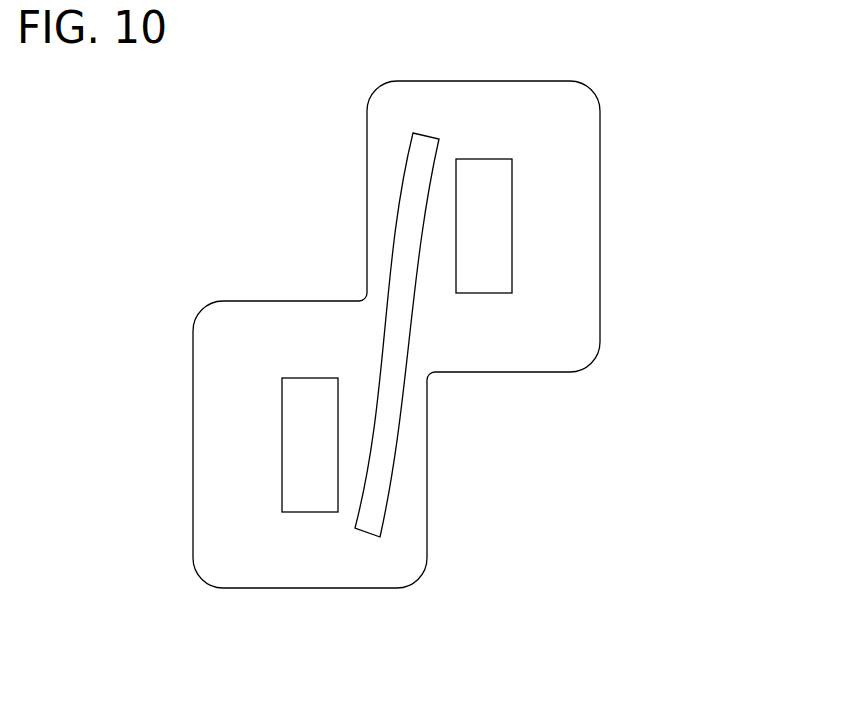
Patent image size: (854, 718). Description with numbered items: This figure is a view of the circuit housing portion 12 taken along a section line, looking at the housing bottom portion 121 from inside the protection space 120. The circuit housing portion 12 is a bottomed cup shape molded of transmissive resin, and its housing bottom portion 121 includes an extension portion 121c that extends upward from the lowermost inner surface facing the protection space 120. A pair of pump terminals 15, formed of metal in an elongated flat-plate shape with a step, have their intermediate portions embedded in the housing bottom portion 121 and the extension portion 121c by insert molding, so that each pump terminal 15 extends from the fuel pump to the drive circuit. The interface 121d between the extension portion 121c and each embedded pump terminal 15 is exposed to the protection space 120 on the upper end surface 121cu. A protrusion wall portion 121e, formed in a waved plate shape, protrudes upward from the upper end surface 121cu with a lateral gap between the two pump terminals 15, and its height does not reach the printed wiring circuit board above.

The protection space 120 is at (324, 186).
The circuit housing portion 12 is at (432, 374).
The housing bottom portion 121 is at (577, 322).
The extension portion 121c is at (479, 230).
The upper end surface 121cu is at (347, 360).
The protrusion wall portion 121e is at (393, 338).
The interface 121d is at (512, 192).
The pump terminal 15 is at (490, 250).